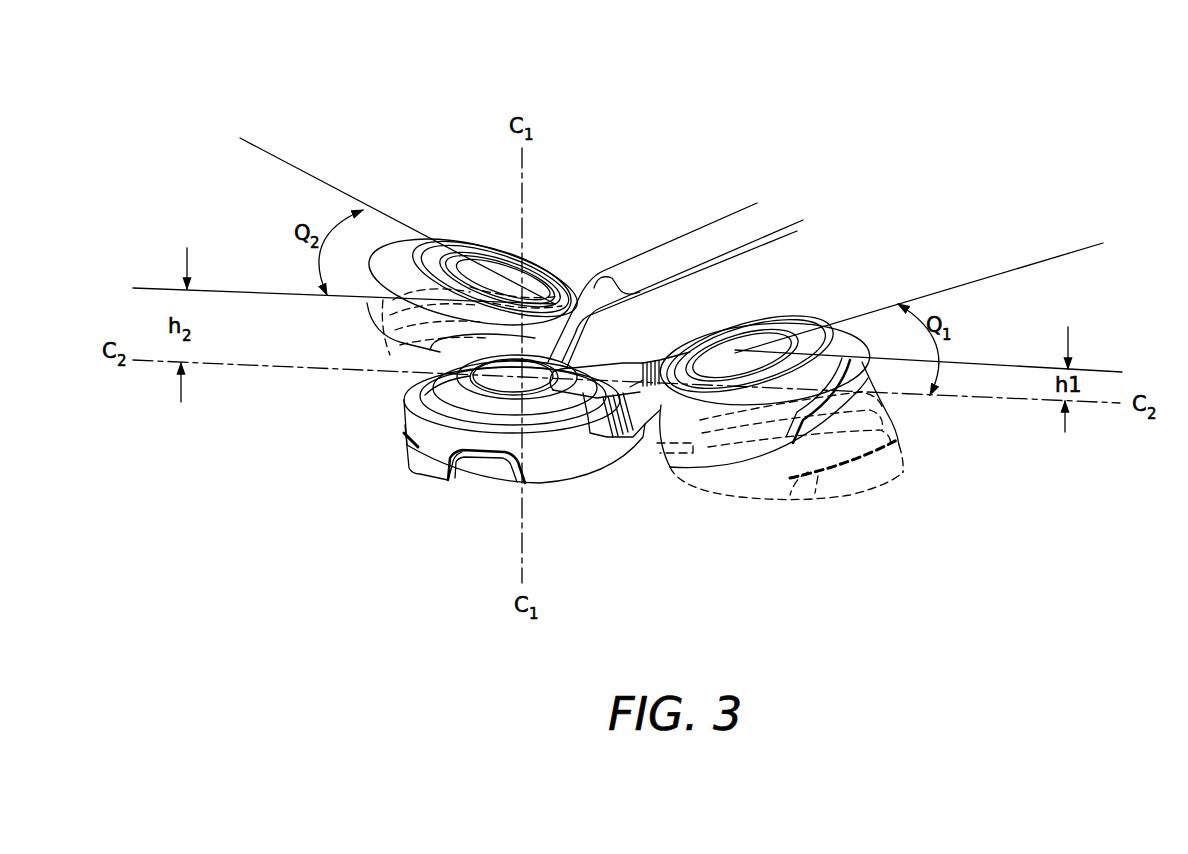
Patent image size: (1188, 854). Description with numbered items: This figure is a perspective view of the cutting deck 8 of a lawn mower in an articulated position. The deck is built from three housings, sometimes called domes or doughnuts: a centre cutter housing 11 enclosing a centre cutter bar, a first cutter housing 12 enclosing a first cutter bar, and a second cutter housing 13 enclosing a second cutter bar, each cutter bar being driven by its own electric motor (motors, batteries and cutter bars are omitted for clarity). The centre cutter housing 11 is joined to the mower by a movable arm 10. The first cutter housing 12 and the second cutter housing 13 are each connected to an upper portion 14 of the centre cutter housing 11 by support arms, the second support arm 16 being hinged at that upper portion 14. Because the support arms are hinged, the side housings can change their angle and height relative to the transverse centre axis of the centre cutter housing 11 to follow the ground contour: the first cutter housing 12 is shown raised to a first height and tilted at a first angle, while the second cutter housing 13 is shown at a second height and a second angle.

The cutting deck 8 is at (330, 80).
The movable arm 10 is at (687, 238).
The centre cutter housing 11 is at (598, 476).
The first cutter housing 12 is at (797, 320).
The second cutter housing 13 is at (478, 248).
The upper portion 14 is at (420, 398).
The second support arm 16 is at (442, 368).